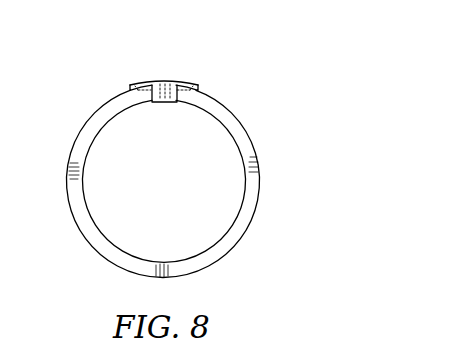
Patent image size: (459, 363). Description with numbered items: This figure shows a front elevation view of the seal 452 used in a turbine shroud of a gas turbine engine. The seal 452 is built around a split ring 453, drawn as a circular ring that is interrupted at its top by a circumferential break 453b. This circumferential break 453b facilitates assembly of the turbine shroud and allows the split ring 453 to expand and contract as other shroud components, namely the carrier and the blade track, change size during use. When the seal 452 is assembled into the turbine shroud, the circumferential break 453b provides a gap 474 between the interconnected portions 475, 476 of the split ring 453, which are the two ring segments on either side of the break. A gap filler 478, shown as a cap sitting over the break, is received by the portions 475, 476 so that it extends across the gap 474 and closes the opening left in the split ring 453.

The seal 452 is at (243, 93).
The split ring 453 is at (254, 148).
The circumferential break 453b is at (166, 78).
The gap 474 is at (163, 108).
The interconnected portion 475 is at (80, 222).
The interconnected portion 476 is at (259, 197).
The gap filler 478 is at (149, 78).